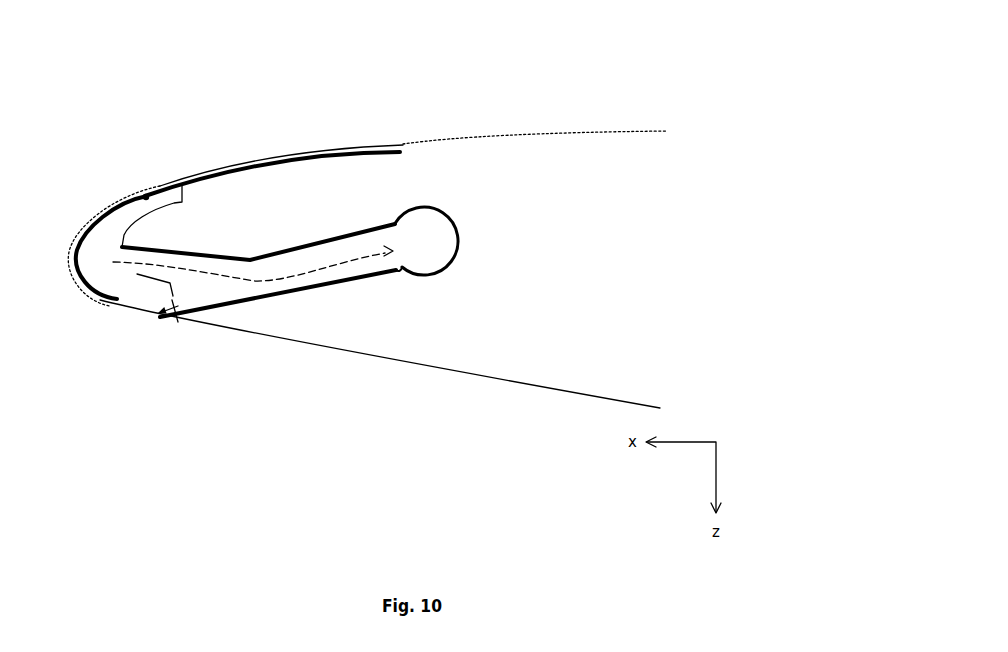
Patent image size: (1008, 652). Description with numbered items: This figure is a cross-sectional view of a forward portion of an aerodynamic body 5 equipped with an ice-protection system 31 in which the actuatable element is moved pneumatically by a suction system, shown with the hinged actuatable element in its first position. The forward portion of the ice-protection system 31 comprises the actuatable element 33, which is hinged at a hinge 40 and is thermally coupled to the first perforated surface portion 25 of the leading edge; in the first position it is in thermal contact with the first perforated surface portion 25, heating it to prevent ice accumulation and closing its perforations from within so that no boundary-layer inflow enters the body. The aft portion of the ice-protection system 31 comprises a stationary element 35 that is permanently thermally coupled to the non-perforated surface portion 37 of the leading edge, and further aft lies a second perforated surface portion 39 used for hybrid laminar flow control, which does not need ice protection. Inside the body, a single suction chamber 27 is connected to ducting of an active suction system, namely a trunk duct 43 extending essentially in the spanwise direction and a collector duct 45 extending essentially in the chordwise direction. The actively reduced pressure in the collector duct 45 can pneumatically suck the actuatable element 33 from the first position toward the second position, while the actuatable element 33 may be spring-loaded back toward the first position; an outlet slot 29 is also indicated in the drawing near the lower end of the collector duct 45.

The aircraft wing 5 is at (617, 76).
The first perforated surface portion 25 is at (100, 233).
The single suction chamber 27 is at (133, 300).
The outlet slot 29 is at (178, 322).
The ice-protection system 31 is at (220, 194).
The actuatable element 33 is at (118, 225).
The stationary element 35 is at (290, 168).
The non-perforated surface portion 37 is at (293, 158).
The second perforated surface portion 39 is at (470, 136).
The hinge 40 is at (145, 195).
The trunk duct 43 is at (440, 277).
The collector duct 45 is at (270, 297).